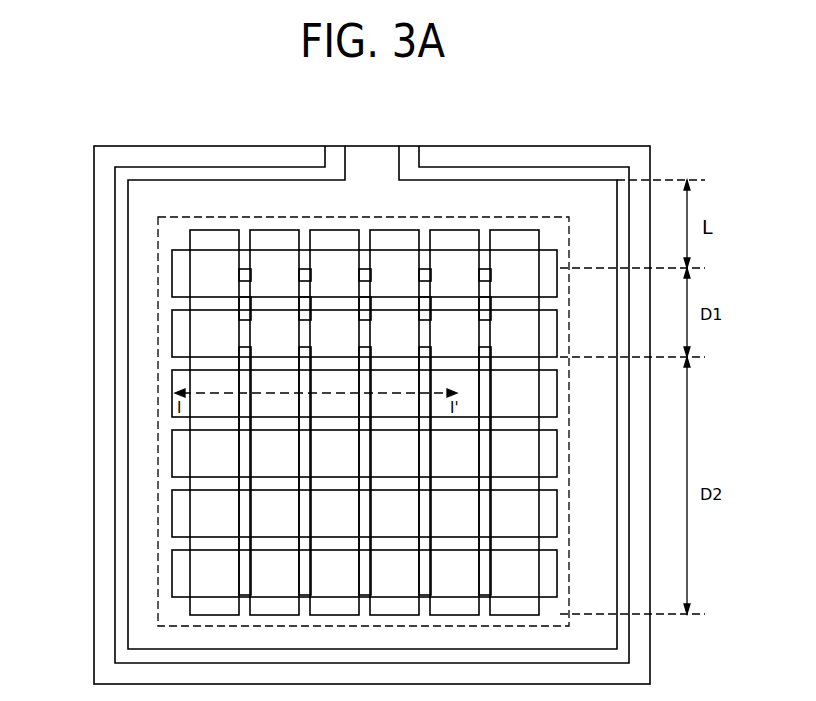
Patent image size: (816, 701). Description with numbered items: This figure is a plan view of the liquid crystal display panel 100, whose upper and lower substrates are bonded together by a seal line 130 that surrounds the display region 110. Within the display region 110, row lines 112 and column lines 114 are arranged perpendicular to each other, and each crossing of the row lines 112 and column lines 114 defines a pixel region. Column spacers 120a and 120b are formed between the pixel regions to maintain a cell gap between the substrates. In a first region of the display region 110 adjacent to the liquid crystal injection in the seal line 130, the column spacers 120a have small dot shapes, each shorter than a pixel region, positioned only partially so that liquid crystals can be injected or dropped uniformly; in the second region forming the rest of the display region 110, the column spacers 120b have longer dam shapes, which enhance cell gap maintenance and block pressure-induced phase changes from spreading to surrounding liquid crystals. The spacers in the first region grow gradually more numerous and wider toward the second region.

The liquid crystal display panel 100 is at (590, 146).
The display region 110 is at (187, 217).
The row lines 112 is at (172, 276).
The column lines 114 is at (512, 230).
The column spacers (dot shapes) 120a is at (240, 279).
The column spacers (dam shapes) 120b is at (239, 512).
The seal line 130 is at (282, 167).